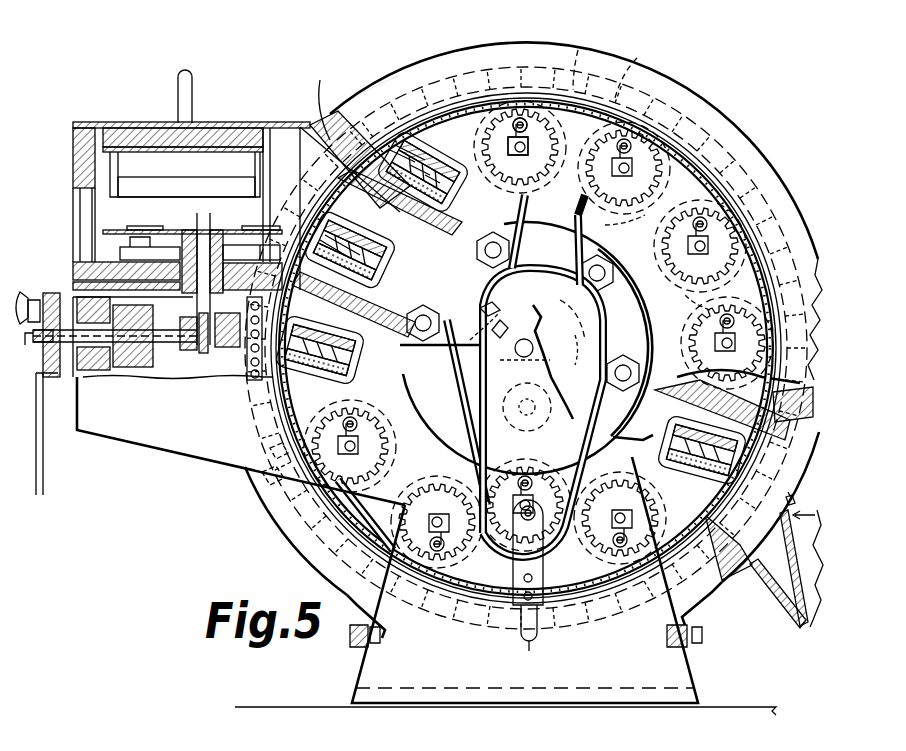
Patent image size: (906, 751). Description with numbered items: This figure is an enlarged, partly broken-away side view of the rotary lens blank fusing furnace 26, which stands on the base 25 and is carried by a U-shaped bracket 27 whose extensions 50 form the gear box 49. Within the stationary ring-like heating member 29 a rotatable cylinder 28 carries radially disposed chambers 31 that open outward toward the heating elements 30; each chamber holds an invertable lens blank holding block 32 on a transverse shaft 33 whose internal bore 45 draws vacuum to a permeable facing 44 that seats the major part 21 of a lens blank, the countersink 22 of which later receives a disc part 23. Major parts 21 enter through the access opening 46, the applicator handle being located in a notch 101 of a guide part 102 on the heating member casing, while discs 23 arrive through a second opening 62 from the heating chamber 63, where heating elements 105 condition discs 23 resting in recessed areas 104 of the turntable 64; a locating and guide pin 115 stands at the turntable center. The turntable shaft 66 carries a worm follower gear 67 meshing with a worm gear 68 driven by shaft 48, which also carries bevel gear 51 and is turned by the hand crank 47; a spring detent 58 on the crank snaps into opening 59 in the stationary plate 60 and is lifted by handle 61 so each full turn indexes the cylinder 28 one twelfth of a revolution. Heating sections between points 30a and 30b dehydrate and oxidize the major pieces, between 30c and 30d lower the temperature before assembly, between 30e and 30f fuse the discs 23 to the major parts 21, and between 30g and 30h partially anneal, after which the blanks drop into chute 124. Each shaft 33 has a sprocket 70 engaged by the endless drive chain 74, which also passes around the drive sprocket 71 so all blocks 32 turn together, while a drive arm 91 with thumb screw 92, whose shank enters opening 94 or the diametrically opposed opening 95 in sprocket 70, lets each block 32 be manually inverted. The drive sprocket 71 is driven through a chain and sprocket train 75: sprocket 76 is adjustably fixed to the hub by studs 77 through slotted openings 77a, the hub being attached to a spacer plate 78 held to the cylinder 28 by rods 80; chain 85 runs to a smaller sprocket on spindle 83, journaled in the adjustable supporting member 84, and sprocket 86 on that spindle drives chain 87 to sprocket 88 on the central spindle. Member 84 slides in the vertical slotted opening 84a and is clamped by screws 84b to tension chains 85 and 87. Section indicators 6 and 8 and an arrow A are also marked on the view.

The section line 6 is at (220, 484).
The section line 8 is at (510, 739).
The major part 21 is at (503, 313).
The countersink 22 is at (522, 328).
The disc part 23 is at (395, 130).
The base 25 is at (315, 707).
The rotary lens blank fusing furnace 26 is at (370, 71).
The U-shaped bracket 27 is at (660, 655).
The cylinder 28 is at (767, 161).
The heating member 29 is at (290, 527).
The heating elements 30 is at (456, 72).
The point 30a is at (710, 565).
The point 30b is at (260, 478).
The point 30c is at (267, 451).
The point 30d is at (280, 330).
The point 30e is at (336, 103).
The point 30f is at (594, 56).
The point 30g is at (640, 68).
The point 30h is at (778, 380).
The chambers 31 is at (763, 443).
The lens blank holding block 32 is at (519, 298).
The shaft 33 is at (520, 303).
The permeable lens mounting facing 44 is at (733, 470).
The internal bore 45 is at (660, 447).
The access opening 46 is at (747, 570).
The hand crank 47 is at (45, 482).
The shaft 48 is at (93, 350).
The gear box 49 is at (78, 303).
The extensions 50 is at (146, 435).
The bevel gear 51 is at (145, 360).
The spring detent 58 is at (28, 290).
The opening 59 is at (50, 294).
The stationary plate 60 is at (62, 373).
The handle 61 is at (26, 348).
The second opening 62 is at (285, 158).
The heating chamber 63 is at (89, 118).
The turntable 64 is at (188, 230).
The supporting shaft 66 is at (205, 355).
The worm follower gear 67 is at (182, 358).
The worm gear 68 is at (223, 357).
The sprocket 70 is at (610, 602).
The drive sprocket 71 is at (544, 305).
The endless drive chain 74 is at (603, 230).
The chain and sprocket train 75 is at (472, 437).
The sprocket 76 is at (490, 282).
The studs 77 is at (524, 373).
The slotted openings 77a is at (535, 360).
The spacer plate 78 is at (630, 282).
The rods 80 is at (624, 360).
The spindle 83 is at (534, 510).
The supporting member 84 is at (533, 502).
The slotted opening 84a is at (531, 645).
The screws 84b is at (541, 625).
The endless chain 85 is at (545, 268).
The second sprocket 86 is at (517, 482).
The endless drive chain 87 is at (483, 338).
The sprocket 88 is at (506, 397).
The drive arm 91 is at (593, 325).
The thumb screw 92 is at (593, 333).
The opening 94 is at (610, 285).
The opening 95 is at (612, 487).
The locating notch 101 is at (790, 492).
The guide part 102 is at (786, 500).
The recessed areas 104 is at (250, 245).
The heating elements 105 is at (140, 253).
The locating and guide pin 115 is at (207, 218).
The chute 124 is at (782, 606).
The direction A is at (804, 527).